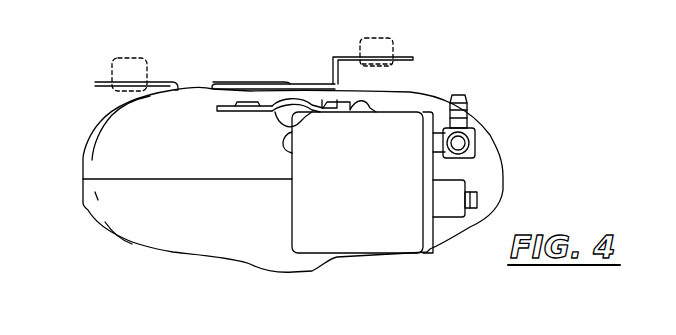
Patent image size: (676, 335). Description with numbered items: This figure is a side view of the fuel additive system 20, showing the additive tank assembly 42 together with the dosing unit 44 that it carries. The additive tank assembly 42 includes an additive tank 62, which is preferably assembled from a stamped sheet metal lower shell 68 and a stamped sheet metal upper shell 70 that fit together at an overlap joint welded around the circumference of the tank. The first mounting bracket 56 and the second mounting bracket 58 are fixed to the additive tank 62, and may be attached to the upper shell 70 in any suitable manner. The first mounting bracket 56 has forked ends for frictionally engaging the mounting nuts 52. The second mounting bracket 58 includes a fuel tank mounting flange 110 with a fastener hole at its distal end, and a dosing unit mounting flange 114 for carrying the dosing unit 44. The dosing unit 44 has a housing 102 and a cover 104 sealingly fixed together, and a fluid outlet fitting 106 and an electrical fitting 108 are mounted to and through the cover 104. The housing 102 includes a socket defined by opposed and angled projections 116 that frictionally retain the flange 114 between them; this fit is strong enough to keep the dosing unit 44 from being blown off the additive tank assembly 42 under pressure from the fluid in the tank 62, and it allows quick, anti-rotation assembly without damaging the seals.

The fuel additive system 20 is at (506, 108).
The additive tank assembly 42 is at (217, 263).
The dosing unit 44 is at (417, 258).
The mounting nuts 52 is at (130, 67).
The first mounting bracket 56 is at (233, 82).
The second mounting bracket 58 is at (270, 98).
The additive tank 62 is at (82, 179).
The lower shell 68 is at (141, 232).
The upper shell 70 is at (120, 145).
The housing 102 is at (382, 196).
The cover 104 is at (431, 250).
The fluid outlet fitting 106 is at (474, 151).
The electrical fitting 108 is at (478, 200).
The fuel tank mounting flange 110 is at (229, 118).
The dosing unit mounting flange 114 is at (332, 114).
The projections 116 is at (334, 110).